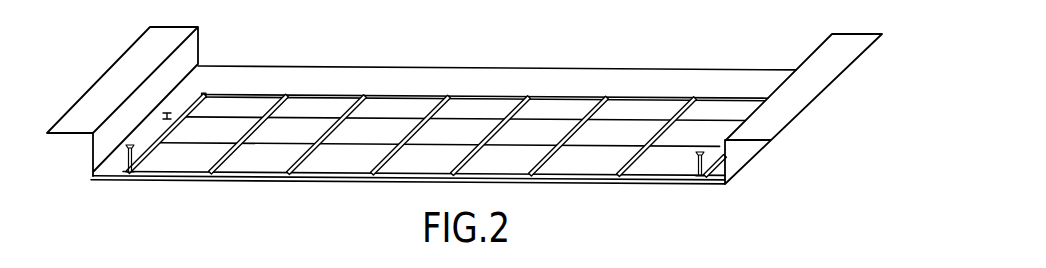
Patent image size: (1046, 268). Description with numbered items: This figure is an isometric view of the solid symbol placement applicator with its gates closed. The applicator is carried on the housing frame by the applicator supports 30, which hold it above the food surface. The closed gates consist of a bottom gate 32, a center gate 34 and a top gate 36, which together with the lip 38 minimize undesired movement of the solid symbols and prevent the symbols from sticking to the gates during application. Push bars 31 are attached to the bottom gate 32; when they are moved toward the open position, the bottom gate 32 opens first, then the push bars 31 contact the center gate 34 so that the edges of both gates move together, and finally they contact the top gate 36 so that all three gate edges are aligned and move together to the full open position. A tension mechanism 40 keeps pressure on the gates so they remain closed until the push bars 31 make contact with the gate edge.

The applicator supports 30 is at (133, 67).
The push bars 31 is at (130, 148).
The bottom gate 32 is at (197, 163).
The center gate 34 is at (445, 135).
The top gate 36 is at (456, 108).
The lip 38 is at (567, 133).
The tension mechanism 40 is at (168, 113).